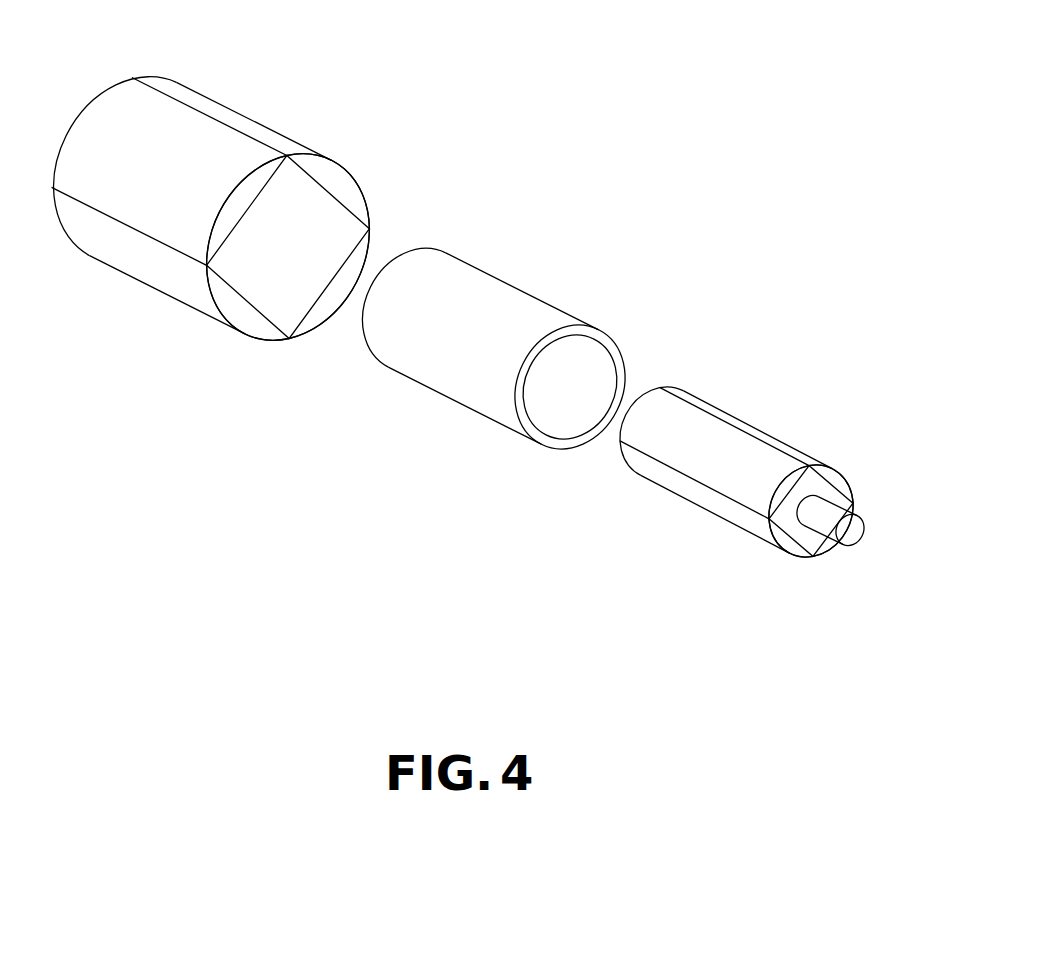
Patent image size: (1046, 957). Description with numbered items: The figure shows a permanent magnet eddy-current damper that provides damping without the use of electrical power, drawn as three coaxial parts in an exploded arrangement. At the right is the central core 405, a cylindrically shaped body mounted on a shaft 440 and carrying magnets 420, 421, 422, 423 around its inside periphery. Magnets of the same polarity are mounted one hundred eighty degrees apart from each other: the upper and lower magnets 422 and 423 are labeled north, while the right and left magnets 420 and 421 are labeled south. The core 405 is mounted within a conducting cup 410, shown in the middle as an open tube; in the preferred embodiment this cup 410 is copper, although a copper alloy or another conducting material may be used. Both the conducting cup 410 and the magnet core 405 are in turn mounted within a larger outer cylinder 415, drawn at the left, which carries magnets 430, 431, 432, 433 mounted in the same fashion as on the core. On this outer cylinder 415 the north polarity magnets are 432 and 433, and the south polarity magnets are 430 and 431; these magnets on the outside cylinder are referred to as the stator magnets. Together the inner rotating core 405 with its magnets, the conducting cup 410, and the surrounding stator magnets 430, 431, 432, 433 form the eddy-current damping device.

The central core 405 is at (623, 470).
The conducting cup 410 is at (527, 292).
The outer rotor magnet assembly 415 is at (255, 120).
The magnet 420 is at (782, 480).
The magnet 421 is at (830, 547).
The magnet 422 is at (847, 467).
The magnet 423 is at (782, 547).
The stator magnet 430 is at (217, 197).
The stator magnet 431 is at (330, 318).
The stator magnet 432 is at (355, 165).
The stator magnet 433 is at (232, 325).
The shaft 440 is at (862, 505).